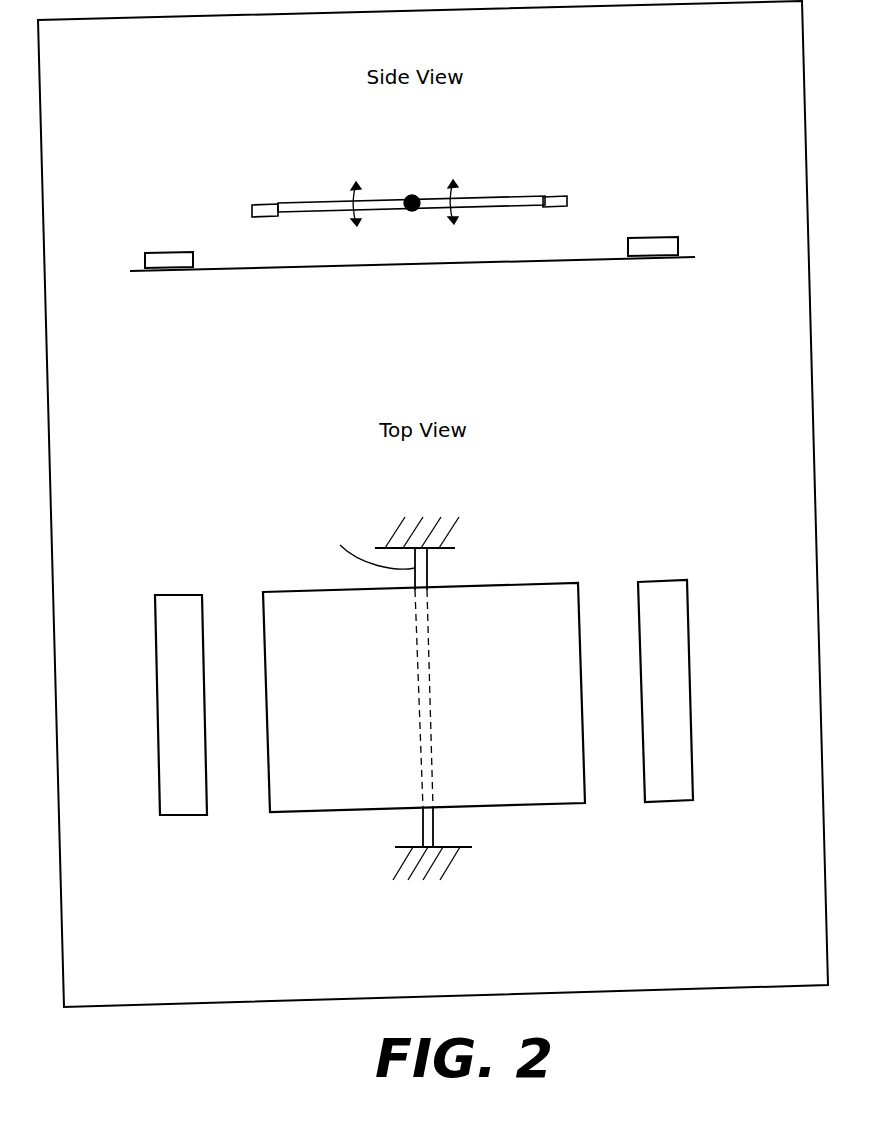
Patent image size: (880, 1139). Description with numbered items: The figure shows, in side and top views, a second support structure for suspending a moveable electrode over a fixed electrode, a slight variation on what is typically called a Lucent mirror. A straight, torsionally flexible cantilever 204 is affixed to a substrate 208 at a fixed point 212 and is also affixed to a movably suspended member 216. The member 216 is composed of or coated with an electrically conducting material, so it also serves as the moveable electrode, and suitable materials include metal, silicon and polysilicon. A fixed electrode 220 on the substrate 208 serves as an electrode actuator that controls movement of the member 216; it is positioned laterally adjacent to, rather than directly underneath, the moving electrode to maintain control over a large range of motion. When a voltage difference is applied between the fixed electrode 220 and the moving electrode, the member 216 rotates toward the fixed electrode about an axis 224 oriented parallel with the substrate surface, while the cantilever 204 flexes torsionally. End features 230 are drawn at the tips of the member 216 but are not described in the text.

The cantilever 204 is at (428, 566).
The substrate 208 is at (446, 510).
The fixed point 212 is at (366, 544).
The movably suspended member 216 is at (507, 196).
The fixed electrode 220 is at (168, 252).
The axis 224 is at (412, 195).
The end block / counterweight 230 is at (265, 204).